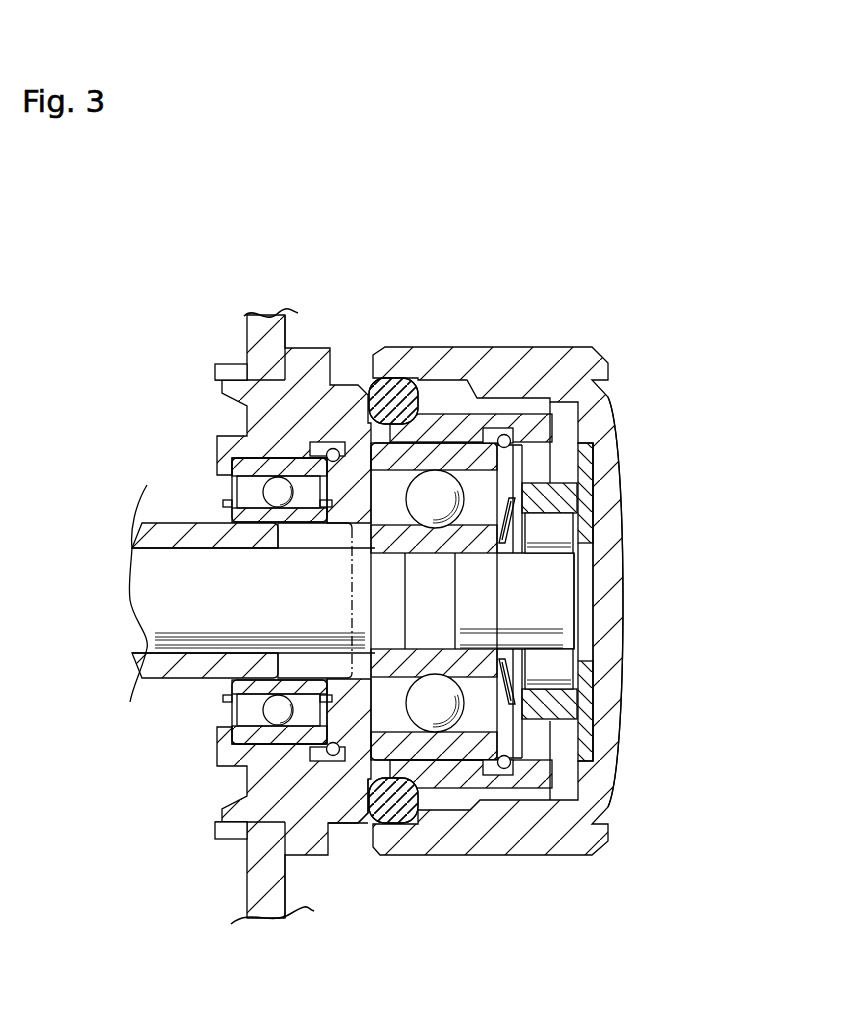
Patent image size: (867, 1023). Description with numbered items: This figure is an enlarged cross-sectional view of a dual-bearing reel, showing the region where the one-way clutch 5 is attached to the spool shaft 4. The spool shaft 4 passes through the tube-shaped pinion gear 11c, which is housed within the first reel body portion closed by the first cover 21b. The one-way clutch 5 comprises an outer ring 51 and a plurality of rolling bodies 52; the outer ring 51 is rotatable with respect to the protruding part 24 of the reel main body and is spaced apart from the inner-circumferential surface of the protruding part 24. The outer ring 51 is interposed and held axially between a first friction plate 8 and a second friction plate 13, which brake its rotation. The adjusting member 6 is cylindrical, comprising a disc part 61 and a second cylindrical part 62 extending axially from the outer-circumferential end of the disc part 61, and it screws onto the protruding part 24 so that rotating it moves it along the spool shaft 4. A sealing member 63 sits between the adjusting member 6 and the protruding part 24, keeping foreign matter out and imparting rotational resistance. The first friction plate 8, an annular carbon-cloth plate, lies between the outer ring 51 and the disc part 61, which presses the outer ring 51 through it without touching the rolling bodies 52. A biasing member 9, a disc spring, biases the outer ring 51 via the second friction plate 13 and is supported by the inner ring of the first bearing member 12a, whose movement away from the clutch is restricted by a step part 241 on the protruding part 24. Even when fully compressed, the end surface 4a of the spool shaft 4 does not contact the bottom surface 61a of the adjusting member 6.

The spool shaft 4 is at (153, 592).
The end surface 4a is at (578, 597).
The one-way clutch 5 is at (559, 473).
The adjusting member 6 is at (621, 473).
The first friction plate 8 is at (566, 713).
The biasing member 9 is at (510, 786).
The pinion gear 11c is at (177, 523).
The first bearing member 12a is at (442, 748).
The second friction plate 13 is at (520, 735).
The first cover 21b is at (250, 887).
The protruding part 24 is at (348, 830).
The step part 241 is at (373, 772).
The outer ring 51 is at (592, 696).
The rolling bodies 52 is at (560, 662).
The disc part 61 is at (620, 503).
The bottom surface 61a is at (580, 567).
The second cylindrical part 62 is at (446, 355).
The sealing member 63 is at (399, 378).